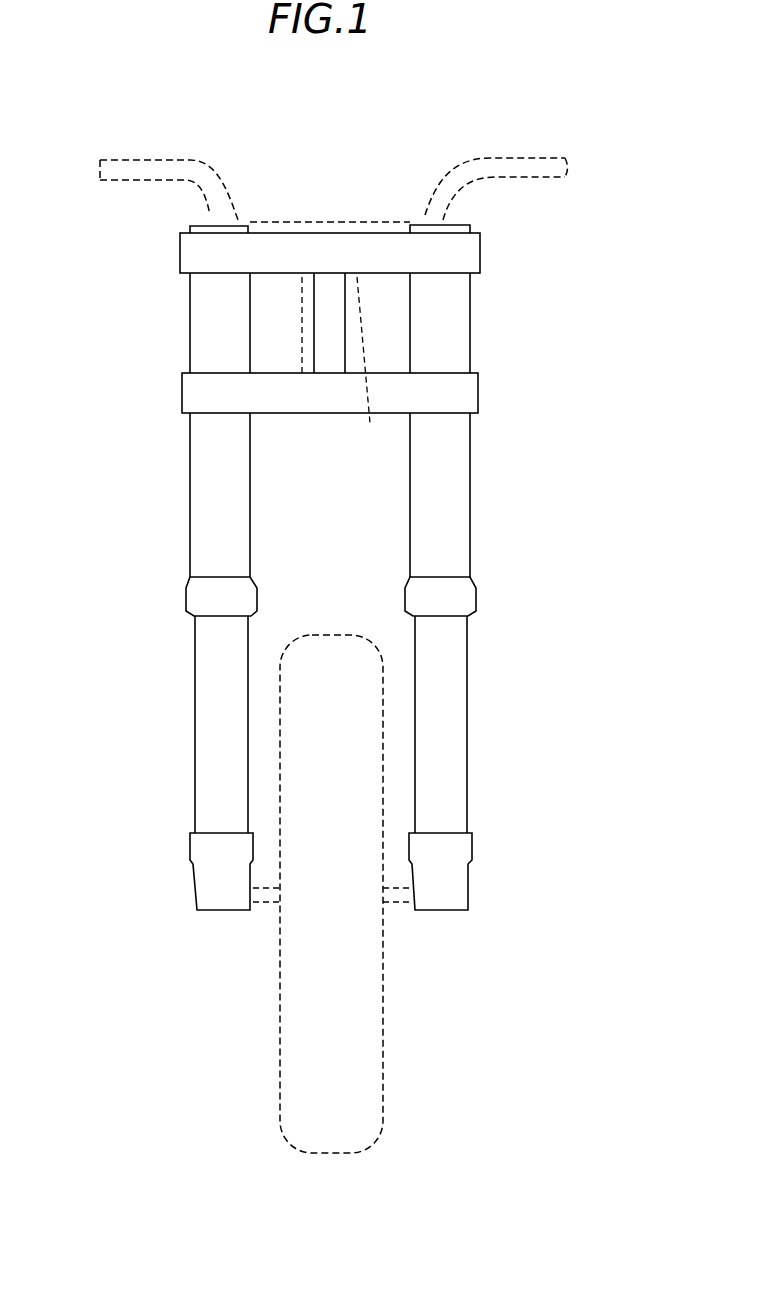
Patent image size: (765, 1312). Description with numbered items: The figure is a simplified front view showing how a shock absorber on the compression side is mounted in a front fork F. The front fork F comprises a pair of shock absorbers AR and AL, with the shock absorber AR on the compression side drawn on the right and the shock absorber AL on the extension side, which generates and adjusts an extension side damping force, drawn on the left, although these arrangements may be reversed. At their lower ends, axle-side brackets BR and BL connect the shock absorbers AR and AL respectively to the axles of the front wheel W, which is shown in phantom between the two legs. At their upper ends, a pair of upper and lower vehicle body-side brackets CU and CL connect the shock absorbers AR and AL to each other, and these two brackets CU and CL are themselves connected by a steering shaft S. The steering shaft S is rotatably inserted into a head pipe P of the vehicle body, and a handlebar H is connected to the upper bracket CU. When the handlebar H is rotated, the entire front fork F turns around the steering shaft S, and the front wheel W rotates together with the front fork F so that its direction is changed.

The handlebar H is at (162, 162).
The steering shaft S is at (320, 315).
The upper vehicle body-side bracket CU is at (472, 257).
The lower vehicle body-side bracket CL is at (468, 392).
The head pipe P is at (370, 373).
The front fork F is at (157, 427).
The shock absorber on the extension side AL is at (200, 670).
The shock absorber on the compression side AR is at (460, 666).
The axle-side bracket BL is at (202, 882).
The axle-side bracket BR is at (465, 885).
The front wheel W is at (297, 1013).